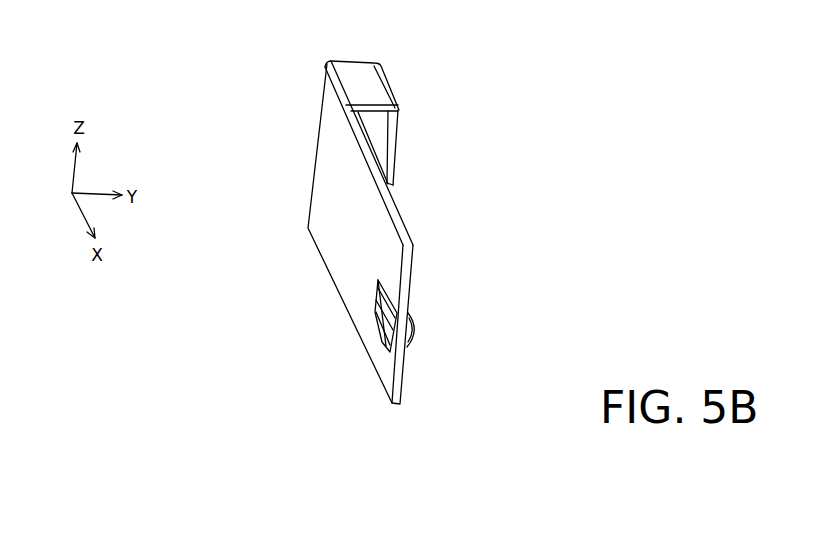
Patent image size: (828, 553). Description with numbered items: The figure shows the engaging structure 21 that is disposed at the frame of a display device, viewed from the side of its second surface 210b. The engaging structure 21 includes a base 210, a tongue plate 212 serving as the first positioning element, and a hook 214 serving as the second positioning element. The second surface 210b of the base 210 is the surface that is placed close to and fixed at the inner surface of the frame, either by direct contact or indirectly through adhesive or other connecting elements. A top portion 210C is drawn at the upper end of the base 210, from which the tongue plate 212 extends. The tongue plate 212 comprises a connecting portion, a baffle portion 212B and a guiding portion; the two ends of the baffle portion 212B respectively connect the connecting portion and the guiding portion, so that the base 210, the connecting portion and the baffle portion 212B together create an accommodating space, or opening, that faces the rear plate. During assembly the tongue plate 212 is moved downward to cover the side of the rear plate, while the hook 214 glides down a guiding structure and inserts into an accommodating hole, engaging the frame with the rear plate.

The engaging structure 21 is at (562, 29).
The base 210 is at (365, 219).
The second surface 210b is at (338, 227).
The top flange 210C is at (356, 74).
The tongue plate 212 is at (433, 139).
The baffle portion 212B is at (397, 137).
The hook 214 is at (418, 333).